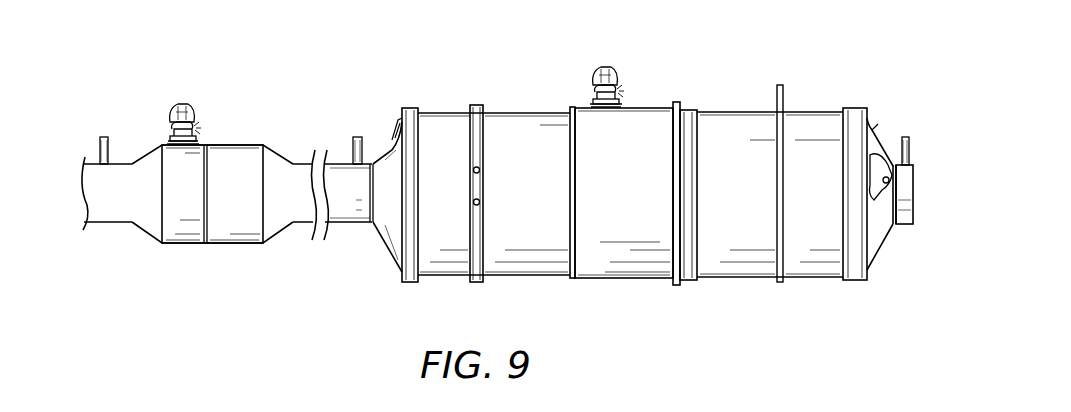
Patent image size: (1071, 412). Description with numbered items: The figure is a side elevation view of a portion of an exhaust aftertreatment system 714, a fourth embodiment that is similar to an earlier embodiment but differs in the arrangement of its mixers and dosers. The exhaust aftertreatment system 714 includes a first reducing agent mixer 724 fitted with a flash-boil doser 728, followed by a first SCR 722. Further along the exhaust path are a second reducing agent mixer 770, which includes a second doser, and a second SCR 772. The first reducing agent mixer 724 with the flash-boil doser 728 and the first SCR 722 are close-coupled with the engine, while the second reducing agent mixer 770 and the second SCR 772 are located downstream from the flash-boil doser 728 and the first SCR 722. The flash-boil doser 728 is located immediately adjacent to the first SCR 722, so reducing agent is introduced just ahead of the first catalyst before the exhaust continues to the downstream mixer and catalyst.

The exhaust aftertreatment system 714 is at (853, 48).
The first SCR 722 is at (236, 135).
The first reducing agent mixer 724 is at (181, 70).
The flash-boil doser 728 is at (168, 100).
The second reducing agent mixer 770 is at (619, 46).
The second SCR 772 is at (746, 103).